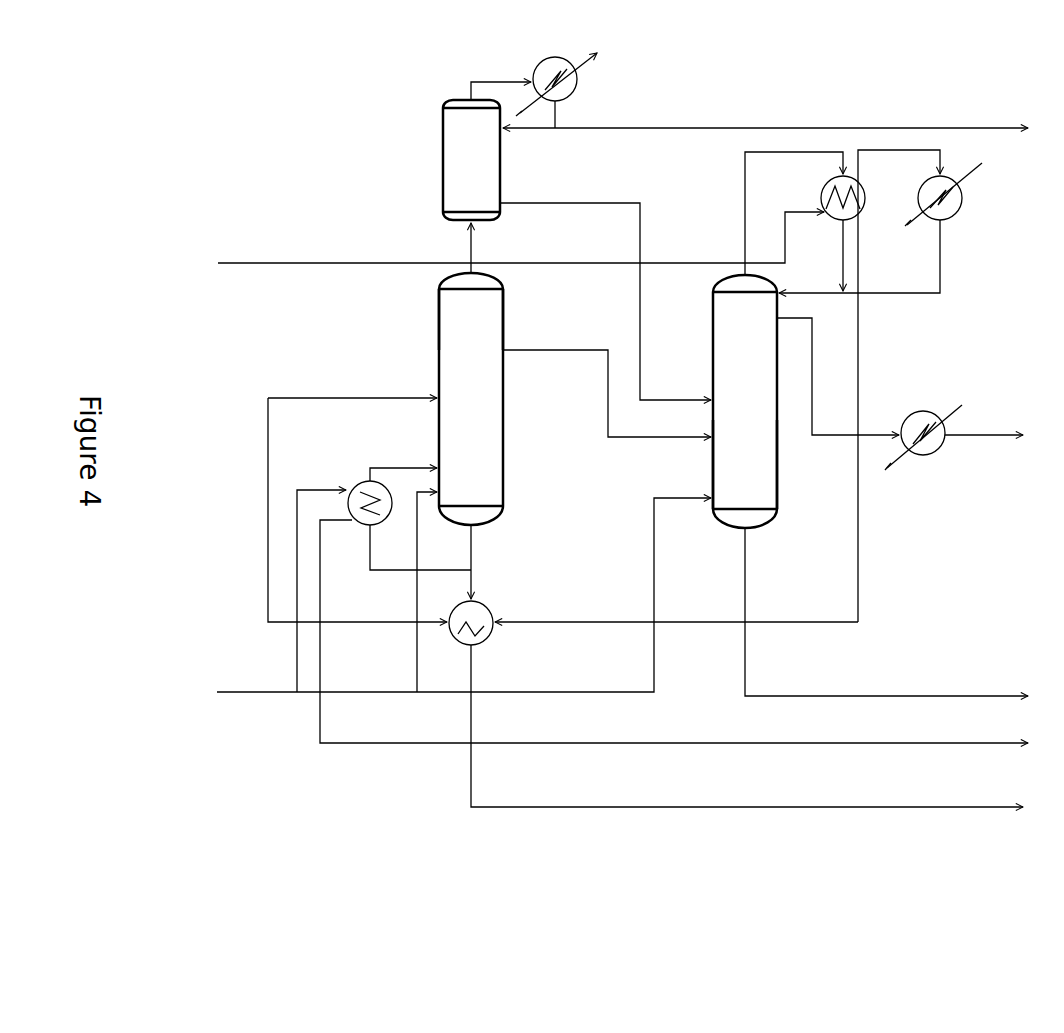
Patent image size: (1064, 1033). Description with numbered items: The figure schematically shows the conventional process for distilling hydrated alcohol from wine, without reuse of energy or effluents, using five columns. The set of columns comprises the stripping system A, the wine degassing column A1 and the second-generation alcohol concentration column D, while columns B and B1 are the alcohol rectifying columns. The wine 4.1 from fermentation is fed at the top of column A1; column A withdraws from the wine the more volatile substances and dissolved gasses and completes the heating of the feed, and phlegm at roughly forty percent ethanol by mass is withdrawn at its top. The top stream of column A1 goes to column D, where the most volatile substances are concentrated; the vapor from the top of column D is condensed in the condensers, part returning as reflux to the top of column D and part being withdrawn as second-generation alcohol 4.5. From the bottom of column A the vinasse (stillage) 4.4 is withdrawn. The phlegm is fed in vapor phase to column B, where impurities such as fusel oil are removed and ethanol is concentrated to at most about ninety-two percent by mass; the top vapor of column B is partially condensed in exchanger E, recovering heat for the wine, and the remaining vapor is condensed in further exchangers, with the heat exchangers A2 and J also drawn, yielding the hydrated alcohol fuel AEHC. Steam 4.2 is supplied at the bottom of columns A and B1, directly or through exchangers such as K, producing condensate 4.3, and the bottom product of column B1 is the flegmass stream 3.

The second-generation alcohol concentration column D is at (471, 160).
The second-generation alcohol 4.5 is at (765, 116).
The stripping column A is at (471, 399).
The wine degassing column A1 is at (471, 286).
The heat exchanger A2 (side reboiler) A2 is at (398, 515).
The wine 4.1 is at (521, 237).
The alcohol rectifying column B is at (778, 340).
The alcohol rectifying column B1 is at (640, 429).
The heat exchanger E is at (851, 233).
The heat exchanger J is at (869, 402).
The hydrated alcohol fuel AEHC is at (986, 417).
The heat exchanger K (bottoms reboiler) K is at (563, 537).
The steam 4.2 is at (464, 591).
The condensate 4.3 is at (674, 631).
The vinasse (stillage) 4.4 is at (747, 726).
The flegmass stream 3 is at (886, 612).